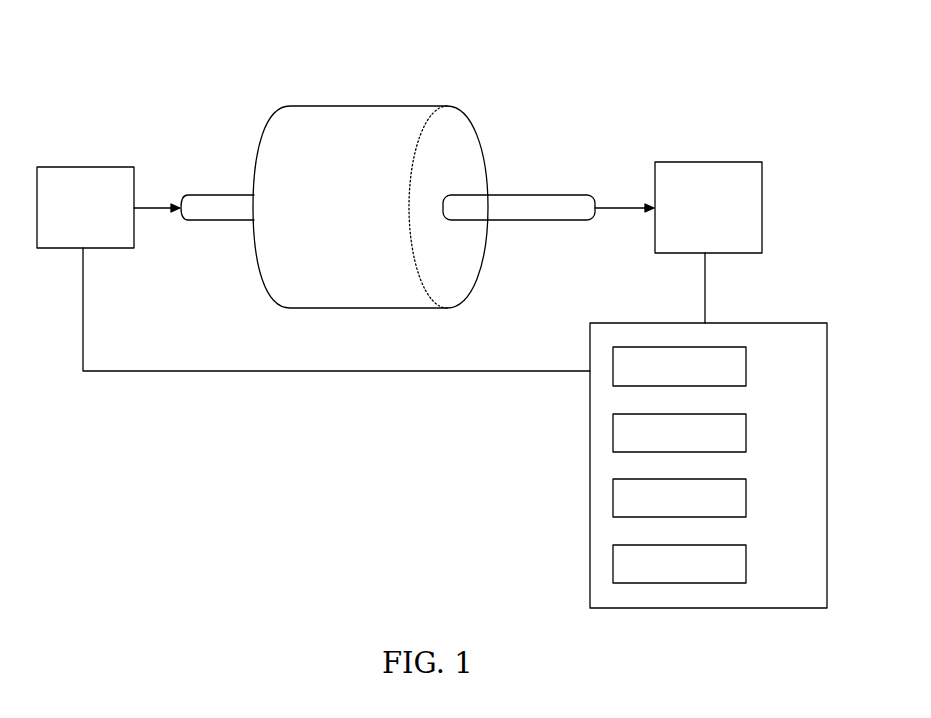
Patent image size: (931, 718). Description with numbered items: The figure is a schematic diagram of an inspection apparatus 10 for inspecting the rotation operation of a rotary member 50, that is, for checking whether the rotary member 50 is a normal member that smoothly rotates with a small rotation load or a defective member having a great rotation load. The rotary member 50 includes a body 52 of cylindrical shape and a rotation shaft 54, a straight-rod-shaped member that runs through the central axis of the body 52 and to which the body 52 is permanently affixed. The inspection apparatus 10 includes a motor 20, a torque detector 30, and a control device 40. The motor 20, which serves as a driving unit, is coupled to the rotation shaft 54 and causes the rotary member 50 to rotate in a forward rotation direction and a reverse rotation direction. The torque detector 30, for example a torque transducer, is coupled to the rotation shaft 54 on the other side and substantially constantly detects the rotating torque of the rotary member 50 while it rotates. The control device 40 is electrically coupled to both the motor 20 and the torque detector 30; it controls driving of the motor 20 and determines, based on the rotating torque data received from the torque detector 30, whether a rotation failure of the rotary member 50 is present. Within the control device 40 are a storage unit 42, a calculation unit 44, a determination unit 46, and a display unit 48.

The inspection apparatus 10 is at (544, 83).
The motor 20 is at (88, 166).
The torque detector 30 is at (712, 162).
The control device 40 is at (790, 322).
The storage unit 42 is at (746, 366).
The calculation unit 44 is at (746, 431).
The determination unit 46 is at (746, 497).
The display unit 48 is at (746, 563).
The rotary member 50 is at (431, 96).
The body 52 is at (365, 106).
The rotation shaft 54 is at (540, 194).